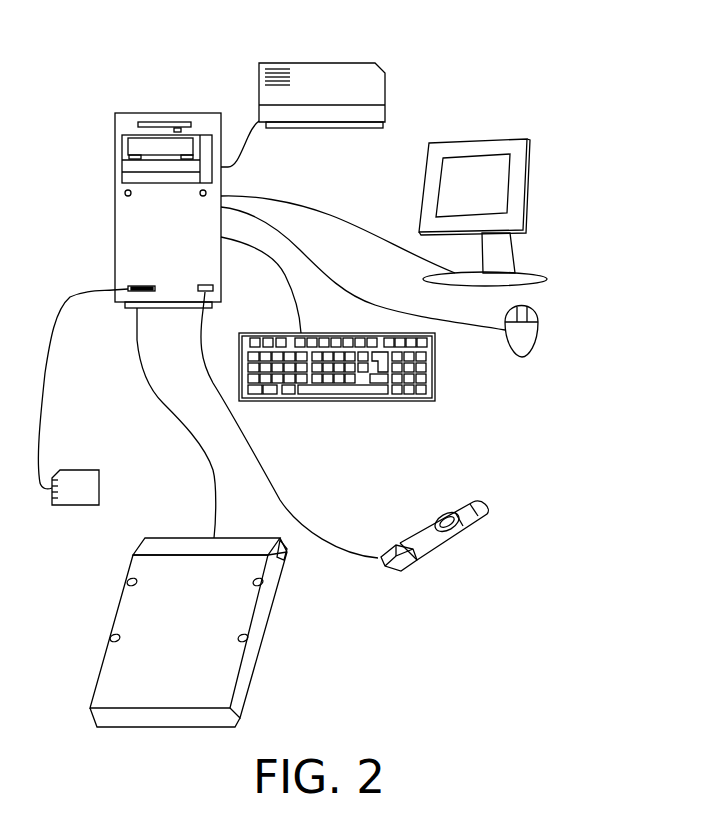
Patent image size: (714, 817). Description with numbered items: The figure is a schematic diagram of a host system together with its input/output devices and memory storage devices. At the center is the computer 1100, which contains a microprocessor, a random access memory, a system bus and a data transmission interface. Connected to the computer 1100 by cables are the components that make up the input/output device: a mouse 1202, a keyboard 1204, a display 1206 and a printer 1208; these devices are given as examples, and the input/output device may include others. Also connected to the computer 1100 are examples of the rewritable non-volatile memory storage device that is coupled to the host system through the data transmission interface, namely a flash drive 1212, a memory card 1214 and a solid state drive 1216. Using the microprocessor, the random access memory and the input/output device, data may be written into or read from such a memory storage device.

The computer 1100 is at (170, 113).
The mouse 1202 is at (538, 333).
The keyboard 1204 is at (435, 378).
The display 1206 is at (485, 135).
The printer 1208 is at (318, 63).
The flash drive 1212 is at (433, 522).
The memory card 1214 is at (100, 478).
The solid state drive 1216 is at (235, 527).